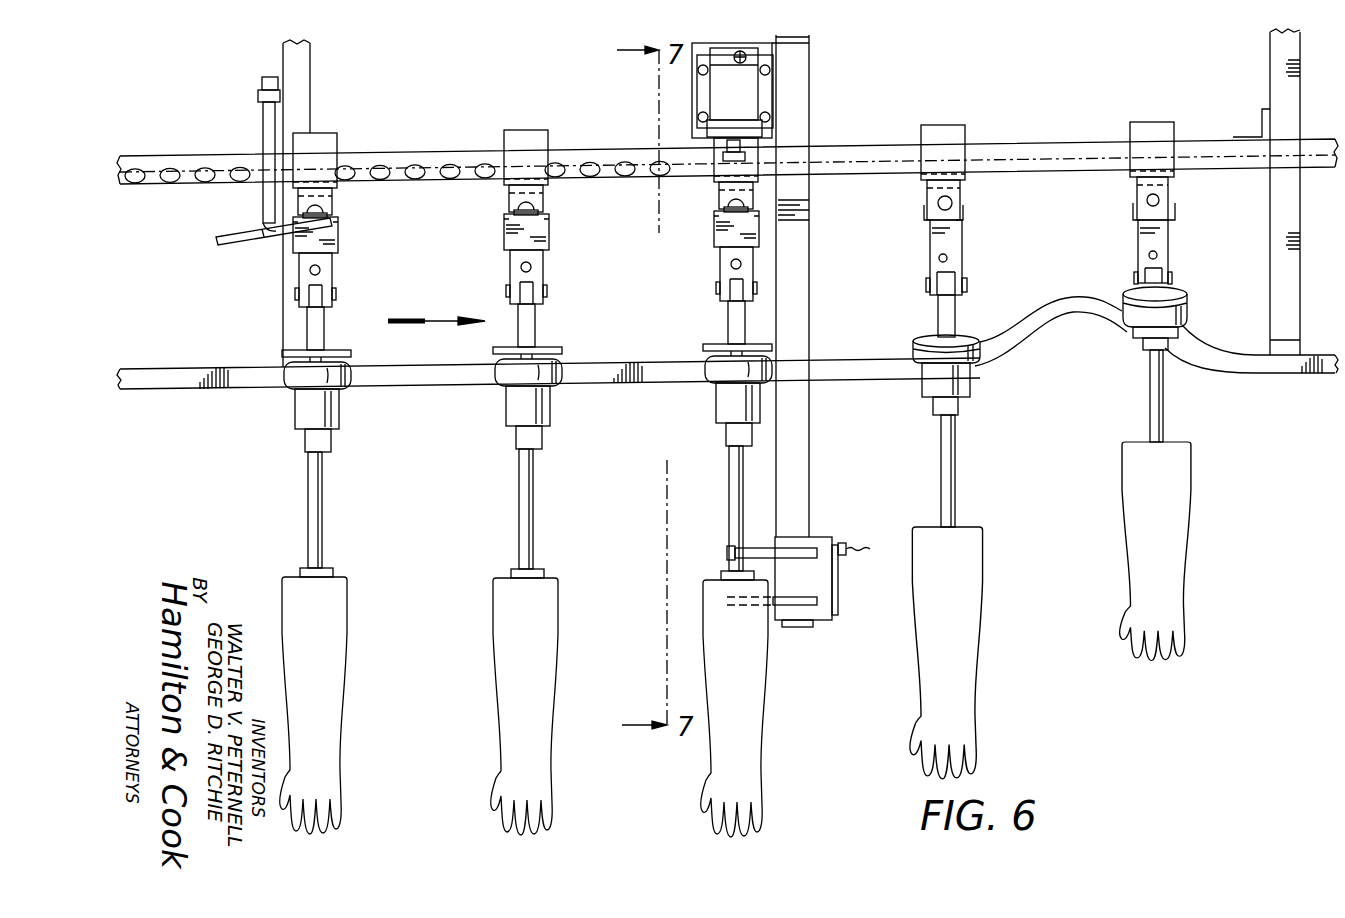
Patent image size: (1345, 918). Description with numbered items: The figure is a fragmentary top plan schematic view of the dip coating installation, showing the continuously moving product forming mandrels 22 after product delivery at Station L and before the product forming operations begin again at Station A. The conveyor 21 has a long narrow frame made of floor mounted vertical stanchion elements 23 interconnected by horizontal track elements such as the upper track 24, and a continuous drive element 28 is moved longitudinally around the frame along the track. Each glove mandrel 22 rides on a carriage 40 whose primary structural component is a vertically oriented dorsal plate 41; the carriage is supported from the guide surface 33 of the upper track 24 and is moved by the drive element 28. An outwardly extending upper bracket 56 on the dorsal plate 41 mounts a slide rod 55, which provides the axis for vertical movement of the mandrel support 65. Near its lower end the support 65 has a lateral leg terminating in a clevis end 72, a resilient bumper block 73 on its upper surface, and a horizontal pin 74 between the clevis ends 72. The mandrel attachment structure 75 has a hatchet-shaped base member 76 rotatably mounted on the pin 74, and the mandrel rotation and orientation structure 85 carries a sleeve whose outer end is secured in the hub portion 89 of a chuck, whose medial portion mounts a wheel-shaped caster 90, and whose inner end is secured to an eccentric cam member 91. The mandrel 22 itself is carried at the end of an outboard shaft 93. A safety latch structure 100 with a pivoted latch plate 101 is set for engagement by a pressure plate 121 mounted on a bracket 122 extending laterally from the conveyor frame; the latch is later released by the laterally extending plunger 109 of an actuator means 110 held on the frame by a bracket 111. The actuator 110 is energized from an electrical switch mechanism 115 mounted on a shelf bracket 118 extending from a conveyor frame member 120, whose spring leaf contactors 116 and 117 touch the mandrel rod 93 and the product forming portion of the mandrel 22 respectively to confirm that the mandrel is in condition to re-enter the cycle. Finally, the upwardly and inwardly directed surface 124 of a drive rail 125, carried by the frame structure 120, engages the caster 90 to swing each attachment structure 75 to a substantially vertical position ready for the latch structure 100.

The conveyor 21 is at (305, 75).
The mandrel 22 is at (337, 651).
The vertical stanchion element 23 is at (1262, 126).
The upper track element 24 is at (565, 155).
The continuous drive element 28 is at (578, 186).
The guide surface 33 is at (856, 151).
The mandrel carriage 40 is at (1152, 128).
The dorsal plate 41 is at (327, 133).
The slide rod 55 is at (952, 203).
The upper bracket 56 is at (930, 196).
The mandrel support 65 is at (345, 255).
The clevis end 72 is at (962, 300).
The resilient bumper block 73 is at (947, 255).
The horizontal pin 74 is at (925, 284).
The mandrel attachment structure 75 is at (538, 314).
The base member 76 is at (312, 330).
The mandrel rotation and orientation structure 85 is at (290, 408).
The hub portion 89 is at (960, 385).
The caster 90 is at (352, 372).
The eccentric cam member 91 is at (962, 340).
The outboard shaft 93 is at (322, 518).
The safety latch structure 100 is at (492, 222).
The latch plate 101 is at (1138, 225).
The plunger 109 is at (745, 148).
The actuator means 110 is at (752, 95).
The bracket 111 is at (808, 66).
The electrical switch mechanism 115 is at (825, 600).
The spring leaf contactor 116 is at (757, 548).
The spring leaf contactor 117 is at (785, 610).
The shelf bracket 118 is at (802, 509).
The conveyor frame member 120 is at (1290, 214).
The pressure plate 121 is at (250, 226).
The bracket 122 is at (262, 117).
The surface 124 is at (1068, 286).
The drive rail 125 is at (845, 368).